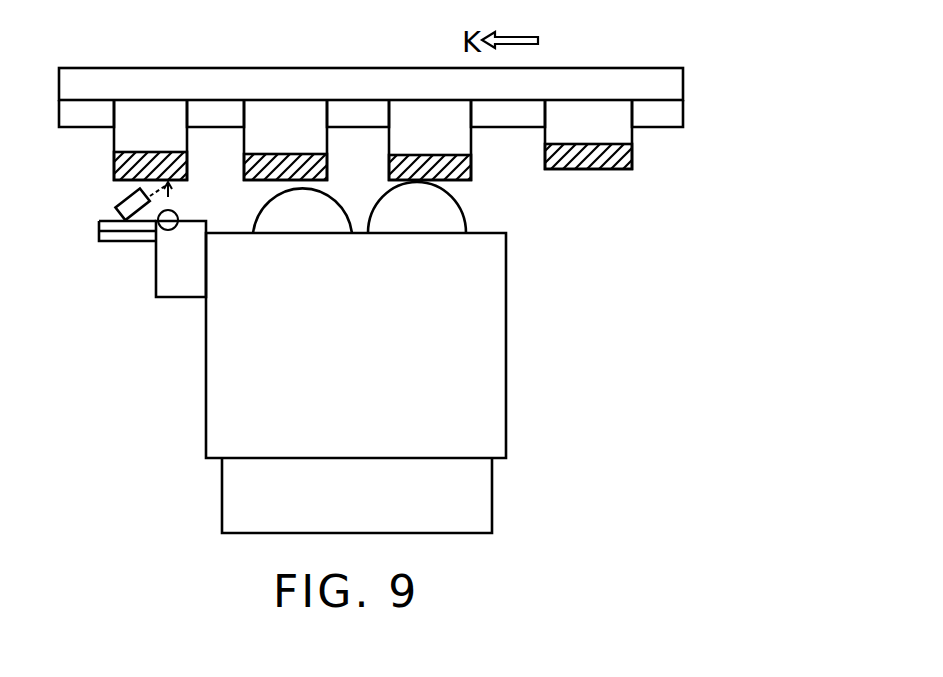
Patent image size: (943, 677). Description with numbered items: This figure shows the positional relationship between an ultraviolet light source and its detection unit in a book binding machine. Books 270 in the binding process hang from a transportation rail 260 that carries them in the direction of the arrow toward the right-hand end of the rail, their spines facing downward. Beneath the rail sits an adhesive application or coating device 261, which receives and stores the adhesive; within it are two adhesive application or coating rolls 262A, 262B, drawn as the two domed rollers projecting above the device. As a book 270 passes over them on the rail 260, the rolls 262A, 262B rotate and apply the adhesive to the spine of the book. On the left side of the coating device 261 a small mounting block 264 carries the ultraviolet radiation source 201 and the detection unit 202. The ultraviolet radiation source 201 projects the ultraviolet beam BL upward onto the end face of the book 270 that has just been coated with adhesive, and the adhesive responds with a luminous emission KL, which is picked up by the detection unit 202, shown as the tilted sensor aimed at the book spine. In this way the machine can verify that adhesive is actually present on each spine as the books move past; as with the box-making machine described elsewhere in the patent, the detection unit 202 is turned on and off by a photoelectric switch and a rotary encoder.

The transportation rail 260 is at (353, 110).
The book 270 is at (587, 170).
The adhesive application or coating device 261 is at (507, 380).
The adhesive application or coating roll 262A is at (299, 223).
The adhesive application or coating roll 262B is at (418, 223).
The support block 264 is at (175, 290).
The ultraviolet radiation source 201 is at (160, 232).
The detection unit 202 is at (118, 200).
The ultraviolet beam BL is at (172, 208).
The luminous emission KL is at (158, 190).